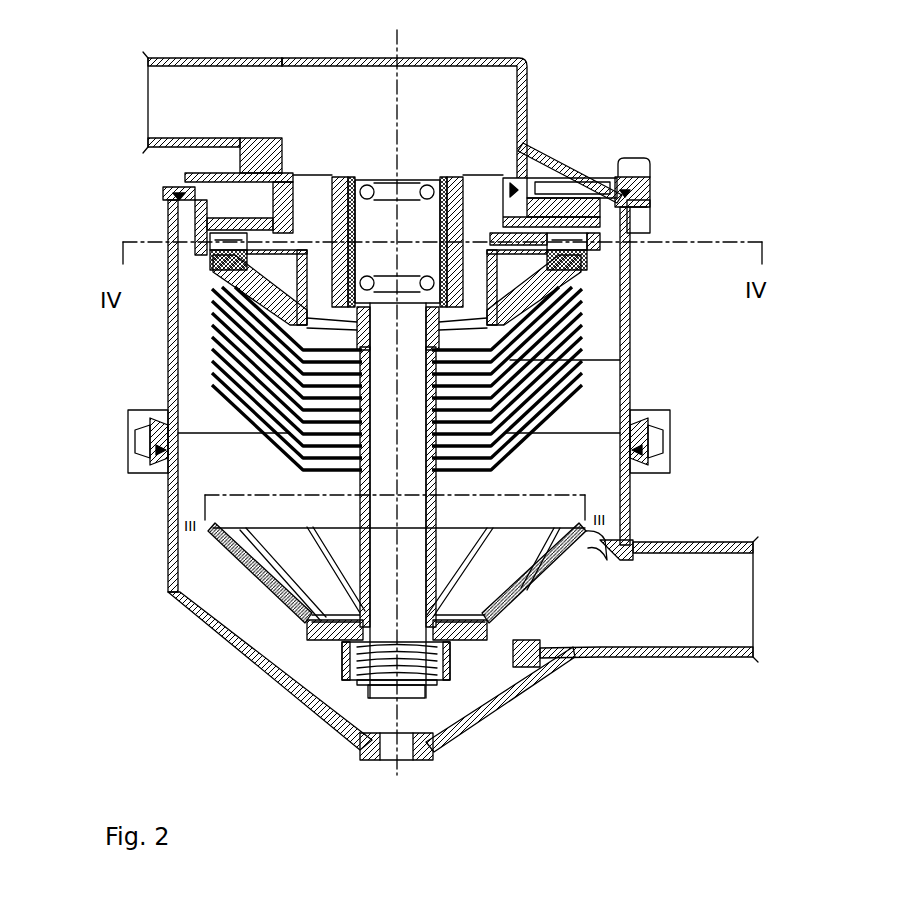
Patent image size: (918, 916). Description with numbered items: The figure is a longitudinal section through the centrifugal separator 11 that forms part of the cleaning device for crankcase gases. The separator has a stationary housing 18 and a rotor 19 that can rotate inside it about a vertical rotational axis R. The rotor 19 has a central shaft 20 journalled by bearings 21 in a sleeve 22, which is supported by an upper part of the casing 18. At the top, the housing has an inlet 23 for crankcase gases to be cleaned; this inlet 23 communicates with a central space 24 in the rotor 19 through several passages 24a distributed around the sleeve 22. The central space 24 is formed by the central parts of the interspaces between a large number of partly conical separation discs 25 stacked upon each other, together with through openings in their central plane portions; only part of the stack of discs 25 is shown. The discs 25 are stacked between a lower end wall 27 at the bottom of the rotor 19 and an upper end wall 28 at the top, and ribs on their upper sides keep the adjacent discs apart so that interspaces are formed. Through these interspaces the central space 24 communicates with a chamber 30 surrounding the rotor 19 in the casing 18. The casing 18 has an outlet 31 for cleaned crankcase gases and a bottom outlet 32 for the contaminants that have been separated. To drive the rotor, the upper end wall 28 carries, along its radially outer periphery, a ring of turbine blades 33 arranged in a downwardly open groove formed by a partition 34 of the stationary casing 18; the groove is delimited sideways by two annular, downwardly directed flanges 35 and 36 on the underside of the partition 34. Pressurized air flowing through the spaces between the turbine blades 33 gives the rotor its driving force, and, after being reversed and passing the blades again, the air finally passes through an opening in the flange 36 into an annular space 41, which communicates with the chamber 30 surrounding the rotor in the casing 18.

The separator 11 is at (177, 662).
The housing 18 is at (172, 513).
The rotor 19 is at (202, 352).
The central shaft 20 is at (407, 570).
The bearings 21 is at (427, 188).
The sleeve 22 is at (480, 175).
The inlet 23 is at (172, 108).
The central space 24 is at (465, 380).
The passages 24a is at (313, 197).
The separation discs 25 is at (240, 412).
The end wall 27 is at (247, 573).
The end wall 28 is at (230, 270).
The chamber 30 is at (565, 455).
The outlet 31 is at (723, 593).
The bottom outlet 32 is at (403, 748).
The turbine blades 33 is at (577, 268).
The partition 34 is at (576, 255).
The annular flange 35 is at (532, 245).
The annular flange 36 is at (592, 246).
The annular space 41 is at (612, 222).
The rotational axis R is at (393, 107).